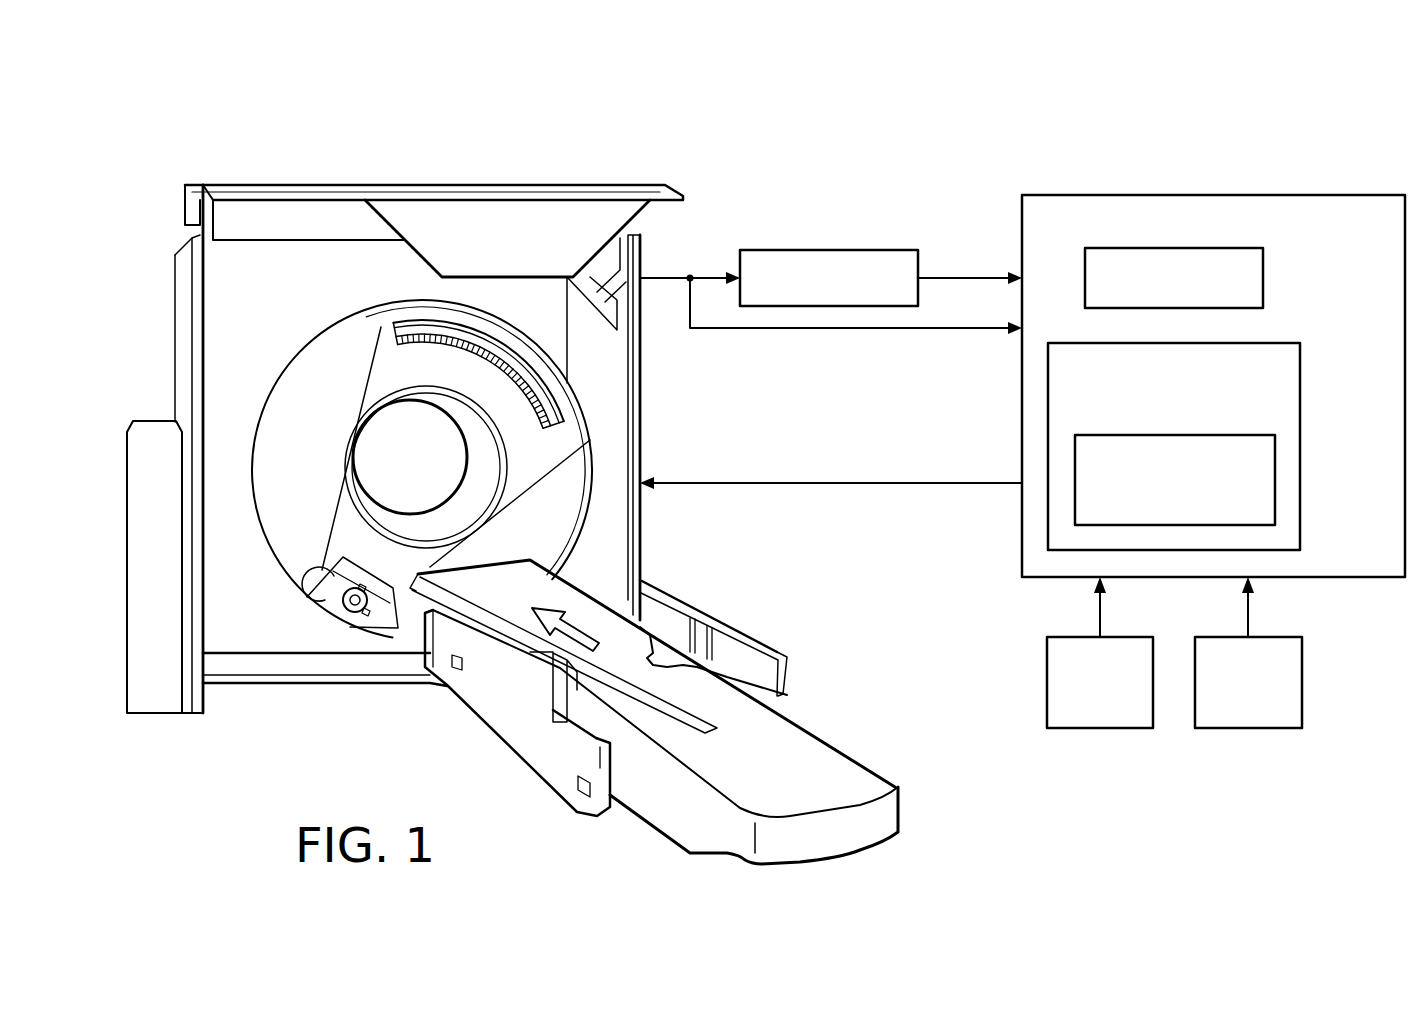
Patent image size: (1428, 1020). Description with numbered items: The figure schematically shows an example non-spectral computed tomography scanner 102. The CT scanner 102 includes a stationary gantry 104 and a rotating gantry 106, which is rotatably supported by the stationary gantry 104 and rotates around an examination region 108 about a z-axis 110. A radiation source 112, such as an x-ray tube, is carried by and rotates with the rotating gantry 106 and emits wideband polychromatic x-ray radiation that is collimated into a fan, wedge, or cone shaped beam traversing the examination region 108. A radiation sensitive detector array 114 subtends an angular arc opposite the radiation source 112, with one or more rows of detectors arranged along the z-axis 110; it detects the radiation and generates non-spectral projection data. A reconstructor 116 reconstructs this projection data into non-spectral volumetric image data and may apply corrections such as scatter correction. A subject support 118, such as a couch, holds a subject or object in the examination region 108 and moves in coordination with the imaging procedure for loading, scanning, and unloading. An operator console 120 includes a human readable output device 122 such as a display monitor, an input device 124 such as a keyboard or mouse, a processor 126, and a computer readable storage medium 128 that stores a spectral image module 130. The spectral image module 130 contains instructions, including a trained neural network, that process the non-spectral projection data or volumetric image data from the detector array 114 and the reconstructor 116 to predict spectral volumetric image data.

The CT scanner 102 is at (184, 128).
The stationary gantry 104 is at (183, 295).
The rotating gantry 106 is at (383, 370).
The examination region 108 is at (430, 470).
The z-axis 110 is at (667, 697).
The radiation source 112 is at (353, 613).
The detector array 114 is at (543, 384).
The reconstructor 116 is at (830, 250).
The subject support 118 is at (867, 782).
The operator console 120 is at (1022, 211).
The output device 122 is at (1248, 728).
The input device 124 is at (1100, 728).
The processor 126 is at (1265, 278).
The computer readable storage medium 128 is at (1300, 383).
The spectral image module 130 is at (1275, 475).